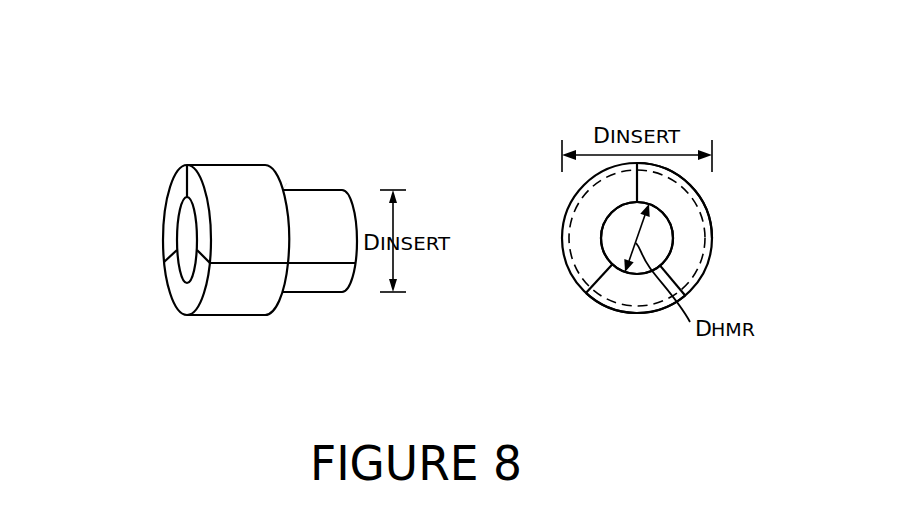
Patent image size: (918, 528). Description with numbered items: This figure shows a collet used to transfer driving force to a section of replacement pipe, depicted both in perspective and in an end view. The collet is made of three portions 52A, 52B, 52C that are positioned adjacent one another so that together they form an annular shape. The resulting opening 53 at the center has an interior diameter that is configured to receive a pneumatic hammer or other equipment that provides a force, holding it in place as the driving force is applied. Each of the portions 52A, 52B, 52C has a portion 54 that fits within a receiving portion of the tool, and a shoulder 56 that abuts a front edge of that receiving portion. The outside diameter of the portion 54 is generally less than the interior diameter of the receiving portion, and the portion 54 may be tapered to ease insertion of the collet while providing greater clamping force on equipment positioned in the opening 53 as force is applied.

The portion 52A is at (238, 182).
The portion 52B is at (187, 305).
The portion 52C is at (170, 223).
The opening 53 is at (672, 257).
The portion 54 is at (338, 197).
The shoulder 56 is at (290, 180).